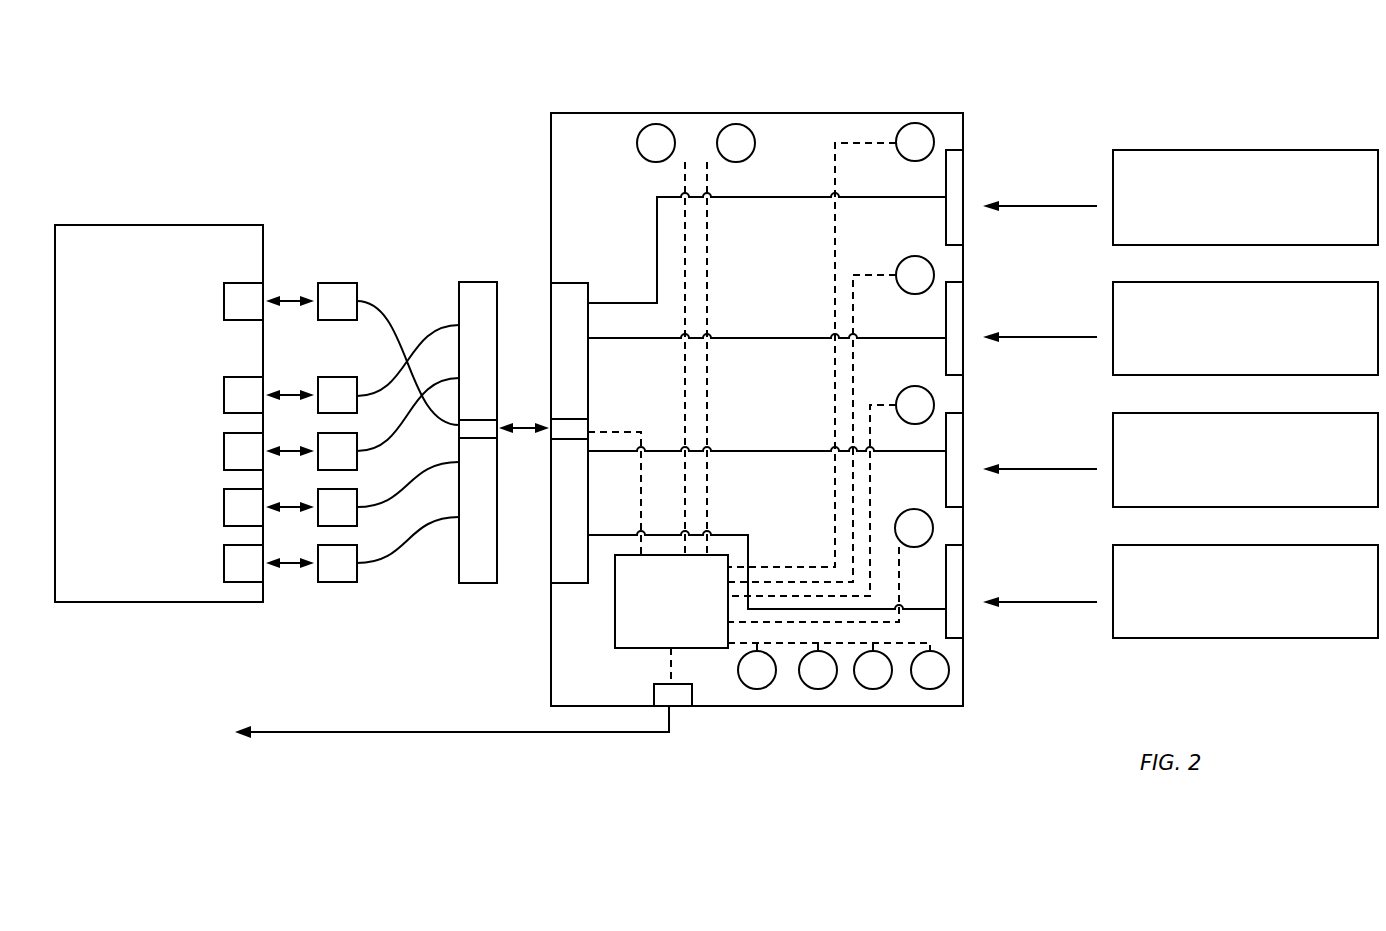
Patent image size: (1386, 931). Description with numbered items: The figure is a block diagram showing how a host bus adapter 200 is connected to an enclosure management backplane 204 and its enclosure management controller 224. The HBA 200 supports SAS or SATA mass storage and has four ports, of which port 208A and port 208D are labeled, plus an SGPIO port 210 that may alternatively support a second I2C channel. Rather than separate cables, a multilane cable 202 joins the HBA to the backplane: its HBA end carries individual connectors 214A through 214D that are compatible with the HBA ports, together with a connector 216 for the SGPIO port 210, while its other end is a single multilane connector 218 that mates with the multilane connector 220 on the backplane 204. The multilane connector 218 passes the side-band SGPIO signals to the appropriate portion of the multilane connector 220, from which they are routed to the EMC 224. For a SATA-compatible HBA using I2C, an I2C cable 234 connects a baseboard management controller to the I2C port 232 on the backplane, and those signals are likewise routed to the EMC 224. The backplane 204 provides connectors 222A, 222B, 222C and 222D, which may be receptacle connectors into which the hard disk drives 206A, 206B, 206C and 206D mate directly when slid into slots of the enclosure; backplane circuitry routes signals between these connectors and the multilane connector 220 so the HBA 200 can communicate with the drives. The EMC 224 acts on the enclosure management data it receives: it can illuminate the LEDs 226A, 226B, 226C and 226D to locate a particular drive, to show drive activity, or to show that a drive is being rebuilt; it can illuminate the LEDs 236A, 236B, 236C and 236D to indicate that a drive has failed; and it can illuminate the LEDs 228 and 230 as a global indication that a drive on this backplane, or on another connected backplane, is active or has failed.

The host bus adapter 200 is at (159, 413).
The multilane cable 202 is at (429, 256).
The enclosure management backplane 204 is at (757, 409).
The hard disk drive 206A is at (1180, 197).
The hard disk drive 206B is at (1180, 328).
The hard disk drive 206C is at (1180, 460).
The hard disk drive 206D is at (1180, 591).
The port 208A is at (240, 385).
The port 208D is at (243, 578).
The SGPIO port 210 is at (232, 292).
The individual connector 214A is at (341, 387).
The individual connector 214D is at (343, 579).
The connector 216 is at (340, 291).
The multilane connector 218 is at (468, 584).
The multilane connector 220 is at (573, 292).
The connector 222A is at (958, 176).
The connector 222B is at (958, 327).
The connector 222C is at (958, 460).
The connector 222D is at (958, 590).
The enclosure management controller 224 is at (671, 601).
The LED 226A is at (924, 124).
The LED 226B is at (934, 278).
The LED 226C is at (934, 407).
The LED 226D is at (934, 529).
The LED 228 is at (672, 126).
The LED 230 is at (738, 125).
The I2C port 232 is at (683, 708).
The I2C cable 234 is at (510, 734).
The LED 236A is at (757, 692).
The LED 236B is at (818, 692).
The LED 236C is at (873, 692).
The LED 236D is at (930, 692).